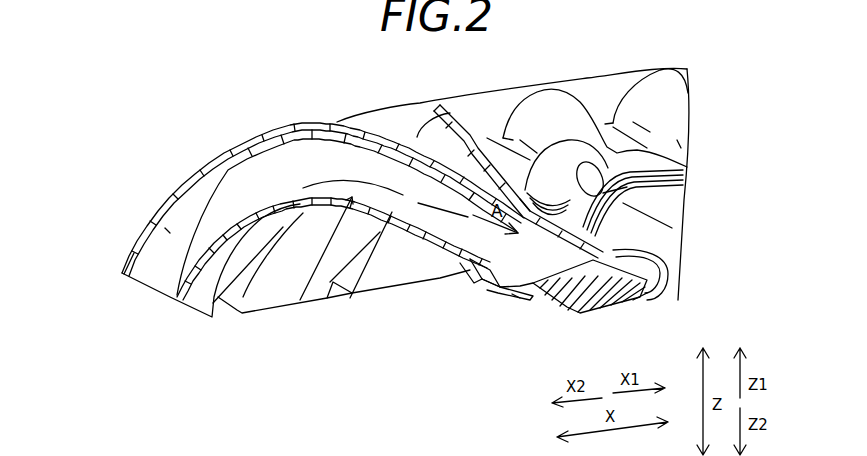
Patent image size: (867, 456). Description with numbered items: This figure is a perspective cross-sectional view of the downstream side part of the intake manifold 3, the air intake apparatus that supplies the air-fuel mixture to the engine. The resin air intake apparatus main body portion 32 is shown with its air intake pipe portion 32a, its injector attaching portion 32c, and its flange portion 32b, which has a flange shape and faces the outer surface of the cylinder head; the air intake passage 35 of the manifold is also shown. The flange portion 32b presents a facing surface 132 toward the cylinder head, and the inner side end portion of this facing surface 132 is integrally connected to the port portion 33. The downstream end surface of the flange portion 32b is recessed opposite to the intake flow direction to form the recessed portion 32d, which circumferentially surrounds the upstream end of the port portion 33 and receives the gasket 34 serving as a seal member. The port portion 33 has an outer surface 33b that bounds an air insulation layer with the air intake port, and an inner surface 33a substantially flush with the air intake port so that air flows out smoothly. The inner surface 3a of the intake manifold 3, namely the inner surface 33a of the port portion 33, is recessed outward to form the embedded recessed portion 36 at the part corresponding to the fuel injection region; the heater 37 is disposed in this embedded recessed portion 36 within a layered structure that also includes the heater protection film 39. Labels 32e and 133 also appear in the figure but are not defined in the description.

The intake manifold 3 is at (226, 100).
The inner surface 3a is at (300, 300).
The air intake apparatus main body portion 32 is at (197, 167).
The air intake pipe portion 32a is at (134, 253).
The flange portion 32b is at (467, 287).
The injector attaching portion 32c is at (452, 107).
The recessed portion 32d is at (527, 192).
The duct inner wall 32e is at (350, 298).
The port portion 33 is at (650, 245).
The inner surface of the port portion 33a is at (592, 258).
The outer surface of the port portion 33b is at (565, 236).
The gasket 34 is at (498, 292).
The air intake passage 35 is at (165, 228).
The embedded recessed portion 36 is at (533, 295).
The heater 37 is at (567, 308).
The heater protection film 39 is at (662, 268).
The facing surface 132 is at (567, 172).
The lower flange 133 is at (470, 270).